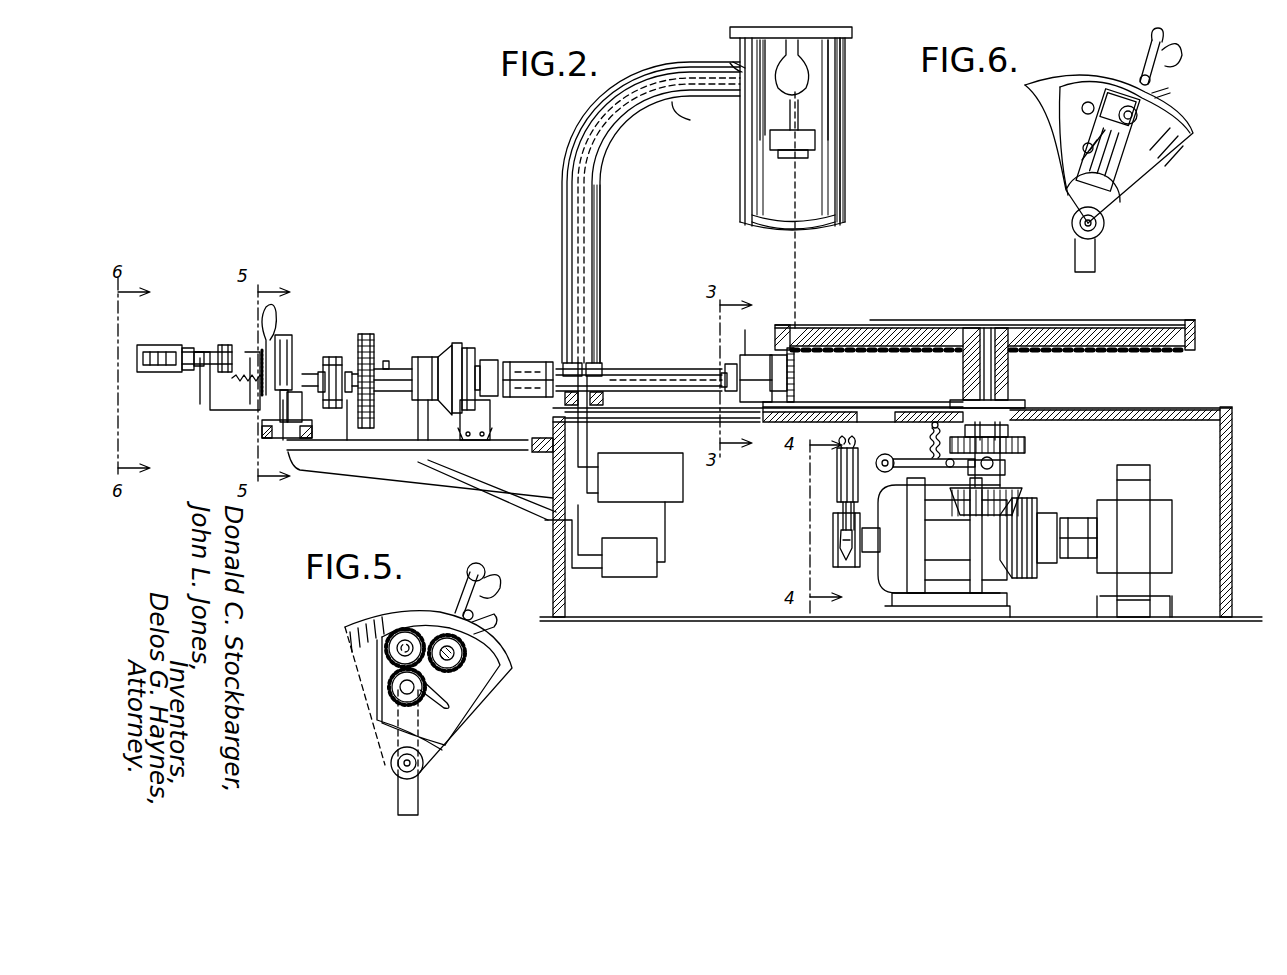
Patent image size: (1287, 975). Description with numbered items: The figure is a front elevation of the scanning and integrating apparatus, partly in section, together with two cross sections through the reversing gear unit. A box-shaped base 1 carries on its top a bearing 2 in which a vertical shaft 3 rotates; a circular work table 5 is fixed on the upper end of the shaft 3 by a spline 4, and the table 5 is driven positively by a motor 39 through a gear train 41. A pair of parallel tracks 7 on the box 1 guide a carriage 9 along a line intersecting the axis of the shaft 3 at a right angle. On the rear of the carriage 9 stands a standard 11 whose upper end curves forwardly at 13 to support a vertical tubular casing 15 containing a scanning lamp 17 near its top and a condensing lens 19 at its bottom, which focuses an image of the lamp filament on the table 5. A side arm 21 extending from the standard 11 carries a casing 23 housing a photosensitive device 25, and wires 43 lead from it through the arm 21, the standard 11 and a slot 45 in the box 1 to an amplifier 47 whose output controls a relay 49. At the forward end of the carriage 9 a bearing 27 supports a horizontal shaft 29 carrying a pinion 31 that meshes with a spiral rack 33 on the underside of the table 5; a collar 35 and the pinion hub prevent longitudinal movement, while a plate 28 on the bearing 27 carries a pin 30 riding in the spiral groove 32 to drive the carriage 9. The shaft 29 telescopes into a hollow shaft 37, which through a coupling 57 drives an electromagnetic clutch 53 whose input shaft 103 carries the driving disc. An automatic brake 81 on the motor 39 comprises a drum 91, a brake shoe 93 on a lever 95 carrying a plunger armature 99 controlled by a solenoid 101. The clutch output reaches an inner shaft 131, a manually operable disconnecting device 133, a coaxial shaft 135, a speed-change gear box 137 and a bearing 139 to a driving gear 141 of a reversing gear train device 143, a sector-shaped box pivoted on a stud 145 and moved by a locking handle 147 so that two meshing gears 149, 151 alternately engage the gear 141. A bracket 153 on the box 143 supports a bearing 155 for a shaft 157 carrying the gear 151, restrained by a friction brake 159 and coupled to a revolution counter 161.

In FIG. 2, the base 1 is at (1232, 462).
In FIG. 2, the bearing 2 is at (1008, 384).
In FIG. 2, the vertical shaft 3 is at (1000, 382).
In FIG. 2, the spline 4 is at (960, 368).
In FIG. 2, the circular work table 5 is at (1128, 322).
In FIG. 2, the tracks 7 is at (815, 420).
In FIG. 2, the carriage 9 is at (670, 400).
In FIG. 2, the standard 11 is at (596, 197).
In FIG. 2, the forwardly curved portion 13 is at (687, 120).
In FIG. 2, the vertical tubular casing 15 is at (832, 192).
In FIG. 2, the scanning lamp 17 is at (812, 67).
In FIG. 2, the condensing lens 19 is at (812, 229).
In FIG. 2, the side arm 21 is at (742, 62).
In FIG. 2, the casing 23 is at (822, 113).
In FIG. 2, the photosensitive device 25 is at (815, 146).
In FIG. 2, the bearing 27 is at (744, 330).
In FIG. 2, the forwardly-projecting plate 28 is at (760, 355).
In FIG. 2, the horizontal shaft 29 is at (721, 372).
In FIG. 2, the upwardly-projecting pin 30 is at (782, 325).
In FIG. 2, the pinion 31 is at (793, 385).
In FIG. 2, the spiral groove 32 is at (796, 352).
In FIG. 2, the spiral rack 33 is at (838, 352).
In FIG. 2, the collar 35 is at (731, 364).
In FIG. 2, the hollow shaft 37 is at (645, 370).
In FIG. 2, the motor 39 is at (898, 580).
In FIG. 2, the gear train 41 is at (1090, 502).
In FIG. 2, the wires 43 is at (770, 118).
In FIG. 2, the slot 45 is at (662, 425).
In FIG. 2, the amplifier 47 is at (683, 492).
In FIG. 2, the relay 49 is at (632, 548).
In FIG. 2, the electromagnetic clutch 53 is at (470, 352).
In FIG. 2, the coupling 57 is at (528, 362).
In FIG. 2, the automatic brake 81 is at (820, 513).
In FIG. 2, the drum 91 is at (838, 545).
In FIG. 2, the brake shoe 93 is at (854, 525).
In FIG. 2, the lever 95 is at (852, 556).
In FIG. 2, the plunger armature 99 is at (842, 526).
In FIG. 2, the solenoid 101 is at (845, 470).
In FIG. 2, the shaft 103 is at (498, 396).
In FIG. 2, the inner shaft 131 is at (390, 395).
In FIG. 2, the manually operable disconnecting device 133 is at (372, 340).
In FIG. 2, the shaft 135 is at (320, 372).
In FIG. 2, the speed-change gear box 137 is at (331, 357).
In FIG. 2, the bearing 139 is at (296, 408).
In FIG. 5, the bearing 139 is at (416, 800).
In FIG. 6, the bearing 139 is at (1093, 259).
In FIG. 5, the driving gear 141 is at (400, 701).
In FIG. 2, the reversing gear train device 143 is at (284, 338).
In FIG. 5, the reversing gear train device 143 is at (345, 698).
In FIG. 6, the reversing gear train device 143 is at (1180, 156).
In FIG. 2, the stud 145 is at (262, 432).
In FIG. 5, the stud 145 is at (420, 766).
In FIG. 6, the stud 145 is at (1102, 228).
In FIG. 2, the locking handle 147 is at (272, 307).
In FIG. 5, the locking handle 147 is at (466, 580).
In FIG. 6, the locking handle 147 is at (1150, 60).
In FIG. 5, the gear 149 is at (390, 652).
In FIG. 5, the gear 151 is at (456, 660).
In FIG. 2, the bracket 153 is at (212, 406).
In FIG. 6, the bracket 153 is at (1122, 186).
In FIG. 2, the bearing 155 is at (190, 372).
In FIG. 6, the bearing 155 is at (1137, 116).
In FIG. 2, the shaft 157 is at (200, 346).
In FIG. 5, the shaft 157 is at (468, 650).
In FIG. 6, the shaft 157 is at (1150, 168).
In FIG. 2, the friction brake 159 is at (231, 352).
In FIG. 2, the revolution counter 161 is at (160, 346).
In FIG. 6, the revolution counter 161 is at (1122, 102).